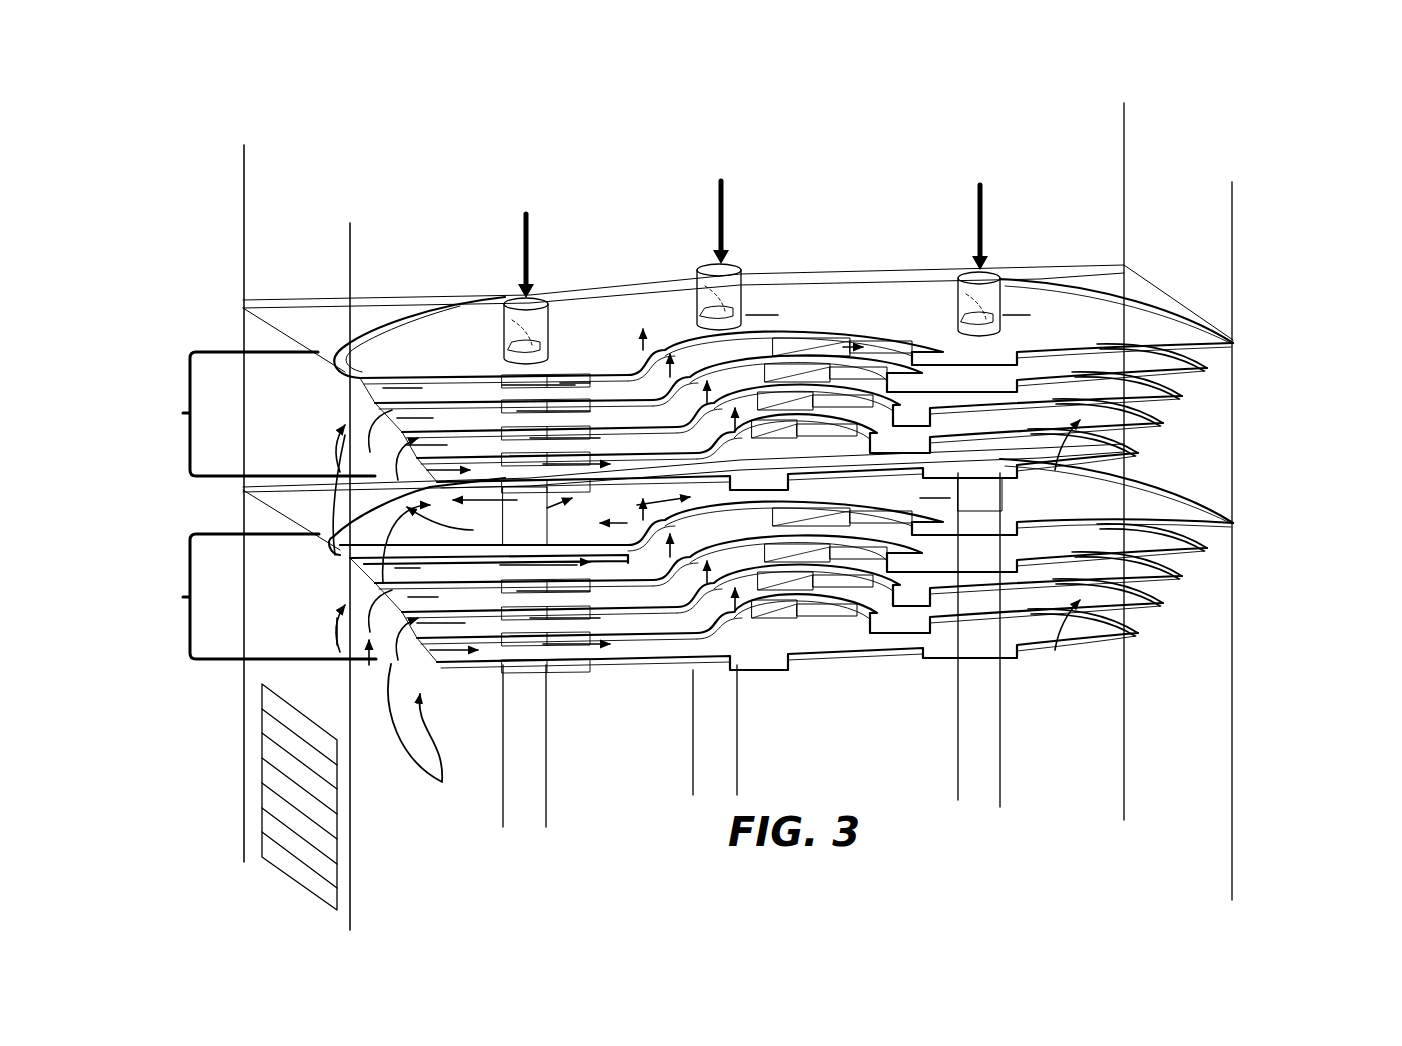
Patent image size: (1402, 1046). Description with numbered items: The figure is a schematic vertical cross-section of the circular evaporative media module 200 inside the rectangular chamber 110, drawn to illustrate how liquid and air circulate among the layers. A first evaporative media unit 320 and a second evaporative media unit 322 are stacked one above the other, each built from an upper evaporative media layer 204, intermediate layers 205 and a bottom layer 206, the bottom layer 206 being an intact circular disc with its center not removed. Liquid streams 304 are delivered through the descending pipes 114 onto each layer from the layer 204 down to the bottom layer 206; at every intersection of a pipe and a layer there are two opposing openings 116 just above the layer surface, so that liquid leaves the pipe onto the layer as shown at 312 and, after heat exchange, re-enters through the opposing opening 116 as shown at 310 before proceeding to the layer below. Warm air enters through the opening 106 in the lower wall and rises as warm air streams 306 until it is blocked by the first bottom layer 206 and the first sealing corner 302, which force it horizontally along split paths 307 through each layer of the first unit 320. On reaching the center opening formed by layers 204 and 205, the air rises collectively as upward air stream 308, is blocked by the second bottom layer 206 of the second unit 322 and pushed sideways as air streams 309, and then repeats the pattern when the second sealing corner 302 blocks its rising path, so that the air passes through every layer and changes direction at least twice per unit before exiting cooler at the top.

The opening 106 is at (262, 776).
The rectangular chamber 110 is at (263, 230).
The descending pipes 114 is at (508, 297).
The openings 116 is at (500, 378).
The circular evaporative media module 200 is at (368, 347).
The evaporative media layer 204 is at (1182, 333).
The evaporative media layers 205 is at (1205, 370).
The bottom layer 206 is at (1138, 453).
The sealing corners 302 is at (310, 490).
The liquid streams 304 is at (531, 234).
The warm air streams 306 is at (411, 711).
The horizontal air paths 307 is at (510, 567).
The upward air stream 308 is at (717, 489).
The sideways air streams 309 is at (430, 540).
The liquid re-entry flow 310 is at (540, 356).
The liquid exit flow 312 is at (560, 335).
The first evaporative media unit 320 is at (252, 596).
The second evaporative media unit 322 is at (251, 414).